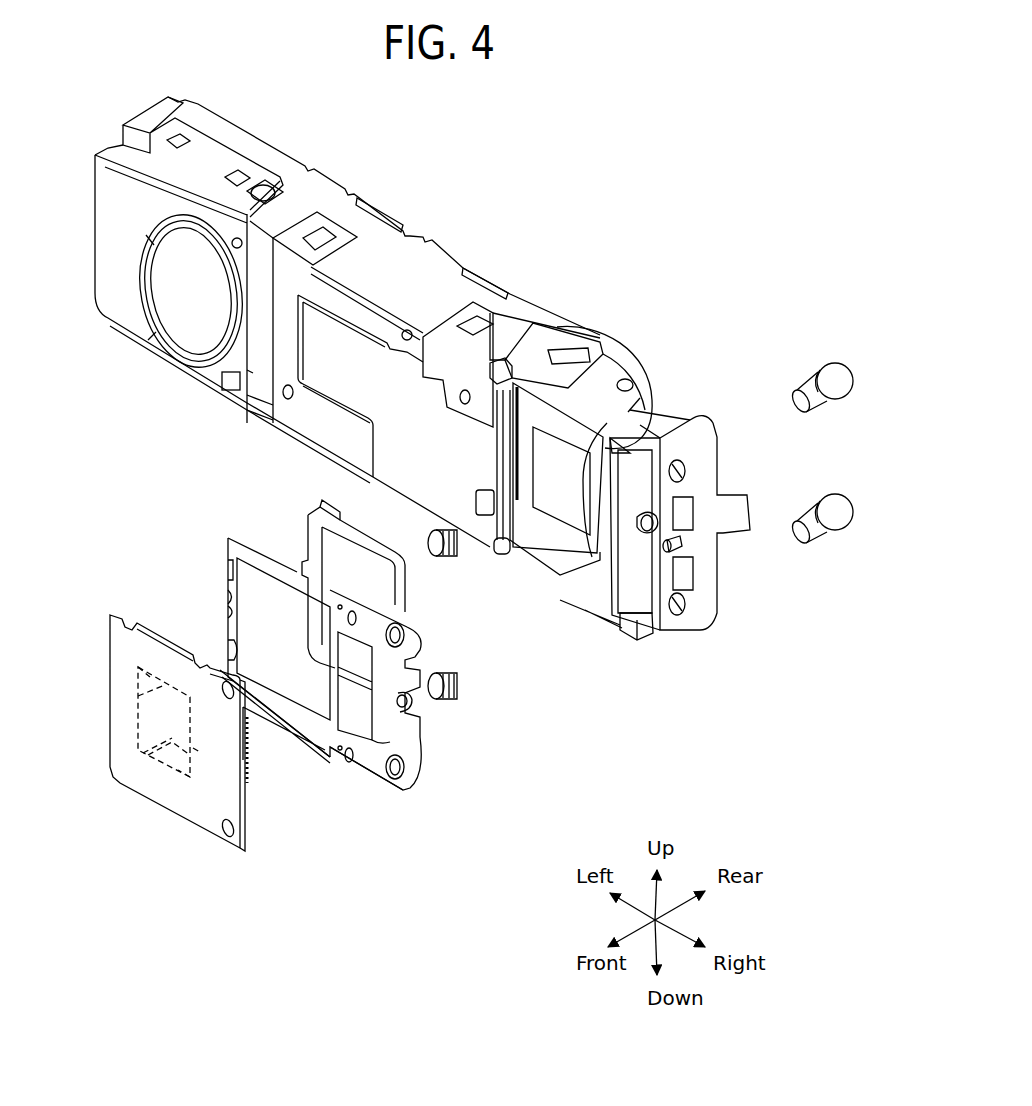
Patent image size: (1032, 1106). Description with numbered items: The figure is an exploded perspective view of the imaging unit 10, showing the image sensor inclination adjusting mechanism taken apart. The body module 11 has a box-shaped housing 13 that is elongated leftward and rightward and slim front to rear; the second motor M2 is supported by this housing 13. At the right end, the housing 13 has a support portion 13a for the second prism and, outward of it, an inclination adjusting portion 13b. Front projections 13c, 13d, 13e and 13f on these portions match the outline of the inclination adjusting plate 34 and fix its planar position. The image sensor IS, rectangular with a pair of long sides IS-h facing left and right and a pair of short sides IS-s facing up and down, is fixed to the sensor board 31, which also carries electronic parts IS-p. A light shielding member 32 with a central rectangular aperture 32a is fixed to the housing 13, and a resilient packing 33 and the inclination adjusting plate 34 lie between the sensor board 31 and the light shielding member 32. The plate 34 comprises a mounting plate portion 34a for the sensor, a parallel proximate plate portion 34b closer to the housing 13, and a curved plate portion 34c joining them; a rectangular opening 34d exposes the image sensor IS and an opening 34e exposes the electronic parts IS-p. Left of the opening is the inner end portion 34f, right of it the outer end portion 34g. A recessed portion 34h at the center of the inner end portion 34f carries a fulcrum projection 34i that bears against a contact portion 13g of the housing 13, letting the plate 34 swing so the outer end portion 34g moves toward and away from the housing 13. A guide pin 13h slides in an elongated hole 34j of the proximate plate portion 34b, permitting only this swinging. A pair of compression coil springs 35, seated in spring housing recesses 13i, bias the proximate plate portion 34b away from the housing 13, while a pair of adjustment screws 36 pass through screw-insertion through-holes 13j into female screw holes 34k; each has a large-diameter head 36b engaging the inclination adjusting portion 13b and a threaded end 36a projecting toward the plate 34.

The imaging unit 10 is at (510, 158).
The body module 11 is at (630, 295).
The housing 13 is at (650, 400).
The support portion 13a is at (547, 383).
The inclination adjusting portion 13b is at (648, 494).
The front projection 13c is at (497, 370).
The front projection 13d is at (503, 552).
The front projection 13e is at (672, 417).
The front projection 13f is at (640, 615).
The contact portion 13g is at (523, 515).
The guide pin 13h is at (686, 545).
The spring housing recess 13i is at (598, 472).
The screw-insertion through-hole 13j is at (685, 465).
The sensor board 31 is at (123, 657).
The image sensor IS is at (172, 738).
The short side IS-s is at (138, 669).
The long side IS-h is at (138, 696).
The electronic parts IS-p is at (252, 793).
The light shielding member 32 is at (592, 362).
The rectangular aperture 32a is at (635, 408).
The packing 33 is at (300, 508).
The inclination adjusting plate 34 is at (226, 502).
The mounting plate portion 34a is at (272, 565).
The proximate plate portion 34b is at (415, 758).
The curved plate portion 34c is at (365, 755).
The rectangular opening 34d is at (228, 650).
The opening 34e is at (372, 722).
The inner end portion 34f is at (227, 573).
The outer end portion 34g is at (337, 732).
The recessed portion 34h is at (227, 600).
The fulcrum projection 34i is at (227, 612).
The elongated hole 34j is at (419, 713).
The female screw hole 34k is at (399, 620).
The compression coil spring 35 is at (433, 527).
The adjustment screw 36 is at (829, 409).
The end of threaded portion 36a is at (799, 408).
The large-diameter head 36b is at (838, 365).
The second motor M2 is at (642, 408).